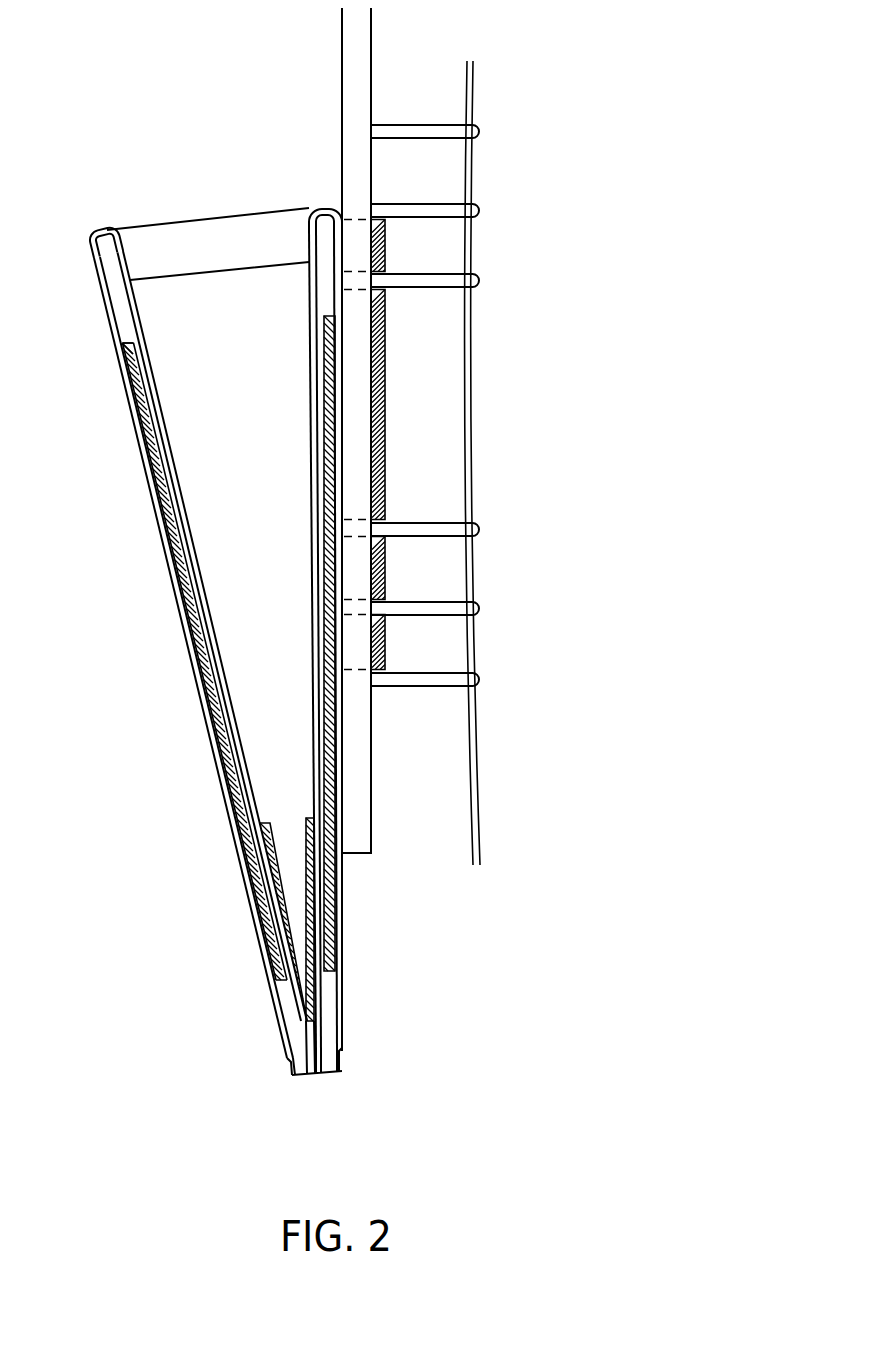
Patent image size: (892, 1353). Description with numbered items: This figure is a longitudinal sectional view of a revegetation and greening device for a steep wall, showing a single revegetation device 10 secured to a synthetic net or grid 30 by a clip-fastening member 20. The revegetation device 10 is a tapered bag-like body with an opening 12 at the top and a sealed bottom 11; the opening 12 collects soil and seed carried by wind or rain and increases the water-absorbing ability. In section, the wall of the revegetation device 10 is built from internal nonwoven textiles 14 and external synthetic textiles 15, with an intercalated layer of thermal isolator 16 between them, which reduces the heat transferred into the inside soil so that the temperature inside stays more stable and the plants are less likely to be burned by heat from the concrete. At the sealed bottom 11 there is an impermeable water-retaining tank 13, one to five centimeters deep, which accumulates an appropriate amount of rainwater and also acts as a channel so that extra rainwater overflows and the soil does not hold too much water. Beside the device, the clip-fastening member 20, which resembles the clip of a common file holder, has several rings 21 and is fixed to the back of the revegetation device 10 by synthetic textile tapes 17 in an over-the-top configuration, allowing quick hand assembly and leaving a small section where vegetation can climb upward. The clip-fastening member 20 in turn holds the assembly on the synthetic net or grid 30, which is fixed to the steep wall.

The revegetation device 10 is at (162, 636).
The sealed bottom 11 is at (298, 1072).
The opening 12 is at (197, 212).
The water-retaining tank 13 is at (268, 857).
The internal nonwoven textiles 14 is at (126, 334).
The external synthetic textiles 15 is at (125, 412).
The thermal isolator 16 is at (148, 460).
The synthetic textile tapes 17 is at (378, 403).
The clip-fastening member 20 is at (400, 83).
The rings 21 is at (471, 672).
The synthetic net or grid 30 is at (473, 765).